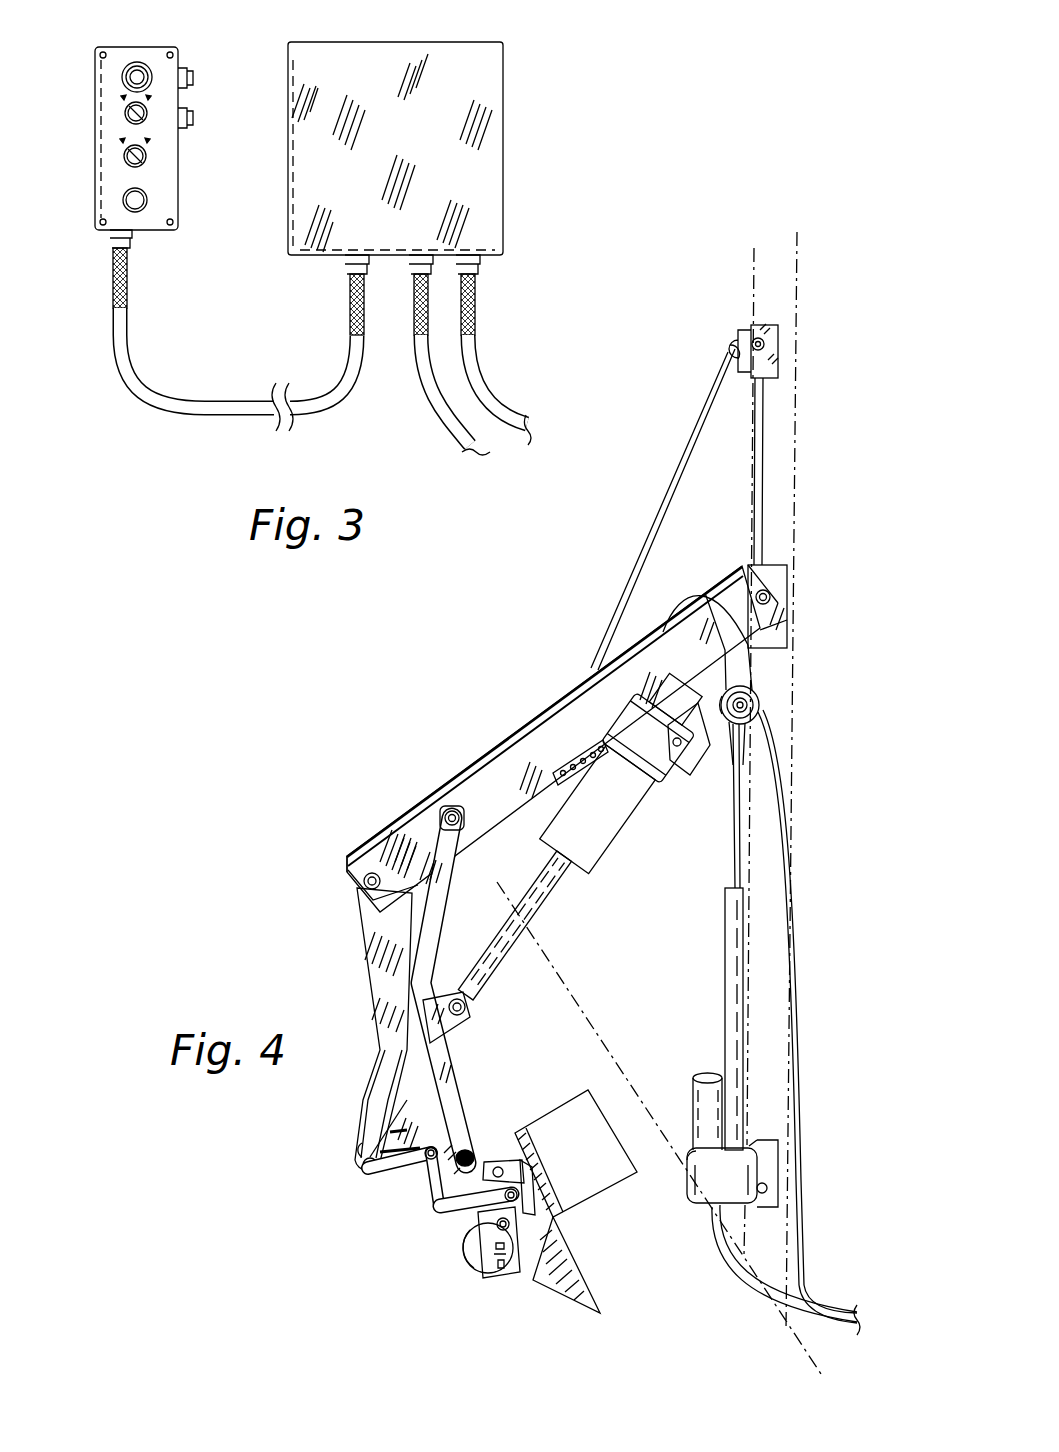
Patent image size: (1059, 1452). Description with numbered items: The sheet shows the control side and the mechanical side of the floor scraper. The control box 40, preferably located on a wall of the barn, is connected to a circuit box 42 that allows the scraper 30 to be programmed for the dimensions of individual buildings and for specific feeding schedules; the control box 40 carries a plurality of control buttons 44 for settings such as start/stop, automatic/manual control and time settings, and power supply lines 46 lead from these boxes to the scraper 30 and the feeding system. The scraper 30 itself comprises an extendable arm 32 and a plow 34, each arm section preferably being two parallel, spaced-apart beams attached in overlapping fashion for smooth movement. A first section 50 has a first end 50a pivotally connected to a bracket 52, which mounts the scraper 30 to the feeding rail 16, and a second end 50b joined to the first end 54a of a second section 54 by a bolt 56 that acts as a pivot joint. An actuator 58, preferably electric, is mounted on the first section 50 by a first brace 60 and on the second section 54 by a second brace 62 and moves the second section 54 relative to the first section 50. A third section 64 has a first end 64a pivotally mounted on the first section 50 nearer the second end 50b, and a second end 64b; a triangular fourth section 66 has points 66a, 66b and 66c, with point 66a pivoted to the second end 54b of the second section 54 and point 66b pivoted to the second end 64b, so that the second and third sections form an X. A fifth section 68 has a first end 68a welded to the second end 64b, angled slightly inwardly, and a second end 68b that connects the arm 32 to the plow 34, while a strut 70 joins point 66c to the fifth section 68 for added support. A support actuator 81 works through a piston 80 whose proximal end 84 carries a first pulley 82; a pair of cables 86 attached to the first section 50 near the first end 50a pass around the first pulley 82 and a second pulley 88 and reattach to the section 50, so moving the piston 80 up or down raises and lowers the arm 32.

In FIG. 3, the control box 40 is at (212, 78).
In FIG. 3, the circuit box 42 is at (470, 163).
In FIG. 3, the control buttons 44 is at (122, 115).
In FIG. 3, the power supply lines 46 is at (452, 420).
In FIG. 4, the power supply lines 46 is at (793, 1292).
In FIG. 4, the scraper 30 is at (343, 805).
In FIG. 4, the extendable arm 32 is at (400, 845).
In FIG. 4, the plow 34 is at (572, 1265).
In FIG. 4, the first arm section 50 is at (528, 748).
In FIG. 4, the first end of first arm section 50a is at (771, 598).
In FIG. 4, the second end of first arm section 50b is at (368, 868).
In FIG. 4, the bracket 52 is at (777, 570).
In FIG. 4, the second arm section 54 is at (385, 962).
In FIG. 4, the first end of second arm section 54a is at (352, 882).
In FIG. 4, the second end of second arm section 54b is at (462, 1152).
In FIG. 4, the bolt 56 is at (360, 905).
In FIG. 4, the actuator 58 is at (573, 868).
In FIG. 4, the first brace 60 is at (693, 740).
In FIG. 4, the second brace 62 is at (443, 1030).
In FIG. 4, the third arm section 64 is at (440, 880).
In FIG. 4, the first end of third arm section 64a is at (438, 822).
In FIG. 4, the second end of third arm section 64b is at (364, 1168).
In FIG. 4, the fourth arm section 66 is at (412, 1185).
In FIG. 4, the point of fourth arm section 66a is at (372, 1158).
In FIG. 4, the point of fourth arm section 66b is at (430, 1153).
In FIG. 4, the point of fourth arm section 66c is at (452, 1218).
In FIG. 4, the fifth arm section 68 is at (500, 1165).
In FIG. 4, the first end of fifth arm section 68a is at (445, 1207).
In FIG. 4, the second end of fifth arm section 68b is at (525, 1175).
In FIG. 4, the strut 70 is at (462, 1212).
In FIG. 4, the piston 80 is at (745, 845).
In FIG. 4, the support actuator 81 is at (748, 912).
In FIG. 4, the first pulley 82 is at (758, 712).
In FIG. 4, the proximal end of piston 84 is at (738, 724).
In FIG. 4, the cables 86 is at (762, 456).
In FIG. 4, the second pulley 88 is at (776, 352).
In FIG. 4, the feeding rail 16 is at (781, 812).